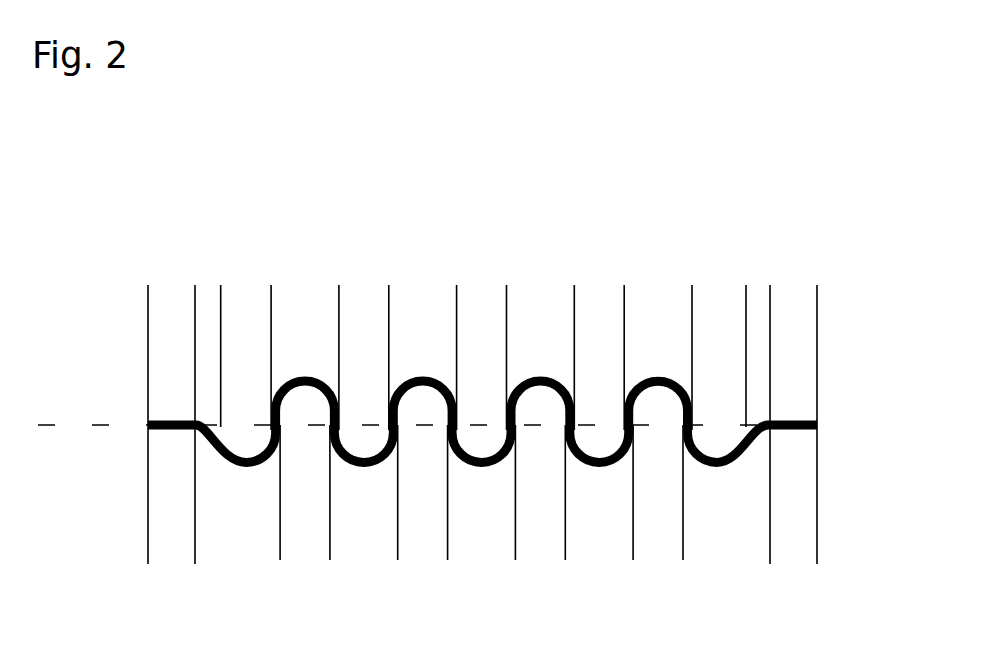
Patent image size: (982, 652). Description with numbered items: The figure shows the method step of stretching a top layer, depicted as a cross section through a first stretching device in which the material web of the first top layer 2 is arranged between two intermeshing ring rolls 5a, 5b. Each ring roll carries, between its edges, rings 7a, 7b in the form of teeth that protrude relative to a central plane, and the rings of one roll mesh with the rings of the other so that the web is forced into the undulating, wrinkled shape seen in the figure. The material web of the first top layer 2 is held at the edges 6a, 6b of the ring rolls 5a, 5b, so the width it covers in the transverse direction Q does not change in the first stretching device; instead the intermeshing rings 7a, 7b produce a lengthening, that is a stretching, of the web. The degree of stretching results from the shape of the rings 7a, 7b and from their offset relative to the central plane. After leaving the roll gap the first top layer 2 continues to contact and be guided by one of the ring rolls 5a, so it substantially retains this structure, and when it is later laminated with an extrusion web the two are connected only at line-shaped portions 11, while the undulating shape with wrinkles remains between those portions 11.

The first top layer 2 is at (208, 441).
The ring roll 5a is at (128, 533).
The ring roll 5b is at (128, 329).
The edge of ring roll 6a is at (168, 482).
The edge of ring roll 6b is at (175, 357).
The rings 7a is at (310, 437).
The rings 7b is at (365, 383).
The line-shaped portions 11 is at (85, 430).
The transverse direction Q is at (658, 252).